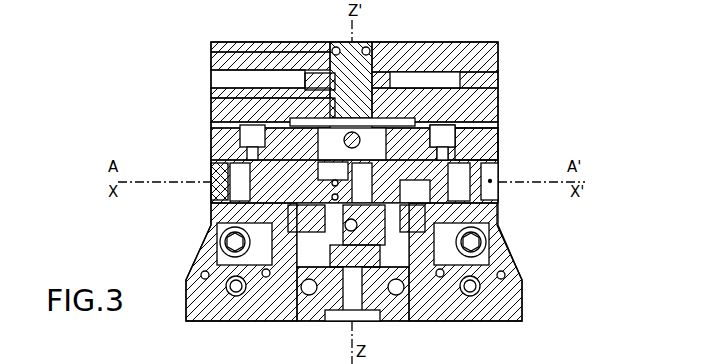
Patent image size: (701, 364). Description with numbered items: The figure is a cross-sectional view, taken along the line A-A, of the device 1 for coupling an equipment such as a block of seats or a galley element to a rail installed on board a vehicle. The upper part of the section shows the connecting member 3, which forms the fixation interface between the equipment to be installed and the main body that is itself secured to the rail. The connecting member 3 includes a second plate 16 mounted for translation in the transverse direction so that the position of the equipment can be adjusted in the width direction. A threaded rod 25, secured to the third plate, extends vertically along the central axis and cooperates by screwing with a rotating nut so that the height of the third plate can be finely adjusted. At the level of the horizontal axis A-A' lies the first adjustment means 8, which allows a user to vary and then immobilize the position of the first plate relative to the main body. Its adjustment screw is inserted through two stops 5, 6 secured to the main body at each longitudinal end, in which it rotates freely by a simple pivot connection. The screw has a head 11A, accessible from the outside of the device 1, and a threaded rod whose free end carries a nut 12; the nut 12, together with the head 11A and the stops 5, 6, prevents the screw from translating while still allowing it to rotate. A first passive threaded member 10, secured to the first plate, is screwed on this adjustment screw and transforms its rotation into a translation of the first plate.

The device 1 is at (508, 68).
The connecting member 3 is at (190, 42).
The stop 5 is at (468, 140).
The stop 6 is at (225, 180).
The first adjustment means 8 is at (493, 173).
The first passive threaded member 10 is at (323, 190).
The head 11A is at (496, 188).
The nut 12 is at (214, 170).
The second plate 16 is at (483, 145).
The threaded rod 25 is at (360, 100).